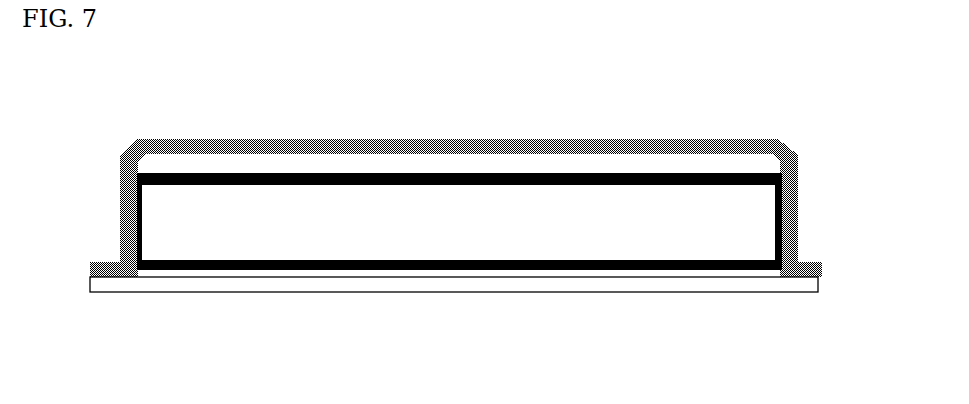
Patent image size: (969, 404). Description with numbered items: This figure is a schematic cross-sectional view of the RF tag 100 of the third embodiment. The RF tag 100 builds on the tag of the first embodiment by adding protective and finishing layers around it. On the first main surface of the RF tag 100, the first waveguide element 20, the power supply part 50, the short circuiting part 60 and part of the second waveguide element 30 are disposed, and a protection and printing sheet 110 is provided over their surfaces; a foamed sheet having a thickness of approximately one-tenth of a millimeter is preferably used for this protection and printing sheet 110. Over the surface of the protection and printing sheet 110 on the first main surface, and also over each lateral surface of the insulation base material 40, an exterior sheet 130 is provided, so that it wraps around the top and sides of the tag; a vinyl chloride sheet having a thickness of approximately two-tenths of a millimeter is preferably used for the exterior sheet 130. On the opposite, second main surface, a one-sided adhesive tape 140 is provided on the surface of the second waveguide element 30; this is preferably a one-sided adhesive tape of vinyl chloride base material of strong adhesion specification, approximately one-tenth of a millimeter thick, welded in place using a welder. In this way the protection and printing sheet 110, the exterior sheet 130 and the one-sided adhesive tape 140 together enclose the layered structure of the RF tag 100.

The RF tag 100 is at (282, 83).
The exterior sheet 130 is at (347, 148).
The protection and printing sheet 110 is at (750, 168).
The first waveguide element 20 is at (535, 173).
The second waveguide element 30 is at (782, 212).
The power supply part 50 is at (459, 221).
The short circuiting part 60 is at (459, 221).
The insulation base material 40 is at (432, 213).
The one-sided adhesive tape 140 is at (453, 283).